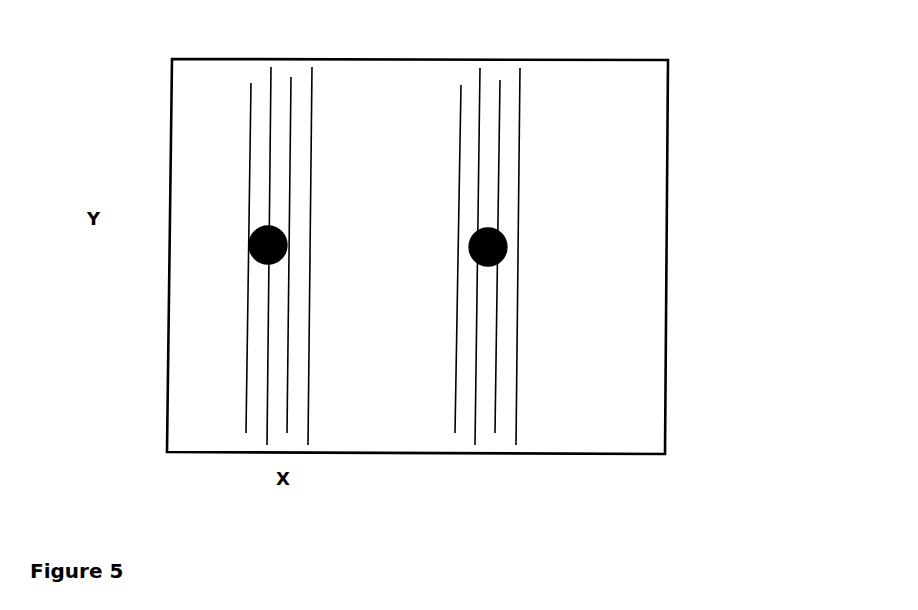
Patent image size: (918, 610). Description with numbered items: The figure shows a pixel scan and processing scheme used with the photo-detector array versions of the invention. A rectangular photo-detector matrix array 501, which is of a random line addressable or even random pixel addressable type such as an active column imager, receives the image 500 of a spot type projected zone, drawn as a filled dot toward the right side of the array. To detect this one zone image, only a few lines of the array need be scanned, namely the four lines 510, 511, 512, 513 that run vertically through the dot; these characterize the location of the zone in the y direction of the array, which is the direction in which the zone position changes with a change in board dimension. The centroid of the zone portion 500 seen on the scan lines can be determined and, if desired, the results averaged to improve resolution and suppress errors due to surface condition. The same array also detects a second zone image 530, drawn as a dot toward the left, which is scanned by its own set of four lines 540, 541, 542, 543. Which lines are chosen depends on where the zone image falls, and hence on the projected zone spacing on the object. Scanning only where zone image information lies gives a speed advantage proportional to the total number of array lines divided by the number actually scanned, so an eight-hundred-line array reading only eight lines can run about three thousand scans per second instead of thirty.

The image of spot type projected zone 500 is at (505, 237).
The photo-detector matrix array 501 is at (417, 270).
The scan line 510 is at (442, 259).
The scan line 511 is at (480, 77).
The scan line 512 is at (500, 87).
The scan line 513 is at (540, 256).
The zone image 530 is at (287, 237).
The scan line 540 is at (237, 258).
The scan line 541 is at (270, 80).
The scan line 542 is at (293, 90).
The scan line 543 is at (335, 256).